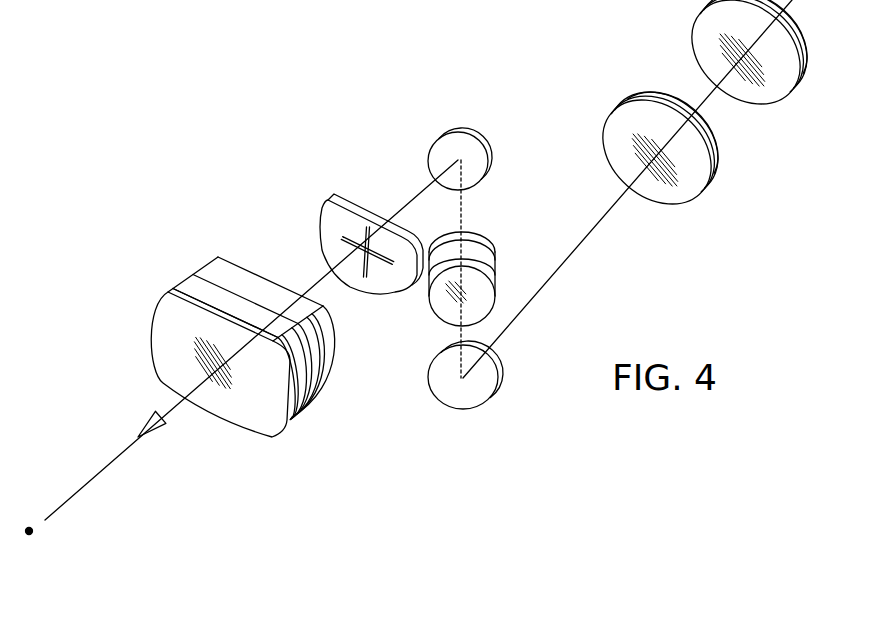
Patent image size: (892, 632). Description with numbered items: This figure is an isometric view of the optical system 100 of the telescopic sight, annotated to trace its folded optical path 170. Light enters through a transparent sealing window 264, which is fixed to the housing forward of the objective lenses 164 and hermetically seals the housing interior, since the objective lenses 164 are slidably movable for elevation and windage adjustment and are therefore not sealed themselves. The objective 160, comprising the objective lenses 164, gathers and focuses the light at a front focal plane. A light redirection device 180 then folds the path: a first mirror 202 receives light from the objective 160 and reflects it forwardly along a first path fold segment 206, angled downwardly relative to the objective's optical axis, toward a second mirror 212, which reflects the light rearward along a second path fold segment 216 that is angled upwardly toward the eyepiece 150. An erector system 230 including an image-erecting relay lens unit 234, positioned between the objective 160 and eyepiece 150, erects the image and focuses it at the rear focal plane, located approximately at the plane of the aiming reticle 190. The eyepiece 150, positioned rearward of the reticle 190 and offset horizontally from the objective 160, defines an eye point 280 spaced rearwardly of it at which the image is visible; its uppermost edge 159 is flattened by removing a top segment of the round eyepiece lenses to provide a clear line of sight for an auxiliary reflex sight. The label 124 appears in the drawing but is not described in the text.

The optical system 100 is at (304, 95).
The light source and detector 124 is at (198, 11).
The eyepiece 150 is at (313, 444).
The uppermost edge 159 is at (208, 306).
The objective 160 is at (709, 208).
The objective lenses 164 is at (708, 173).
The folded optical path 170 is at (557, 270).
The light redirection device 180 is at (497, 126).
The aiming reticle 190 is at (360, 207).
The first mirror 202 is at (497, 397).
The first path fold segment 206 is at (462, 210).
The second mirror 212 is at (487, 152).
The second path fold segment 216 is at (415, 198).
The erector system 230 is at (410, 321).
The image-erecting relay lens unit 234 is at (495, 273).
The transparent sealing window 264 is at (806, 72).
The eye point 280 is at (52, 540).